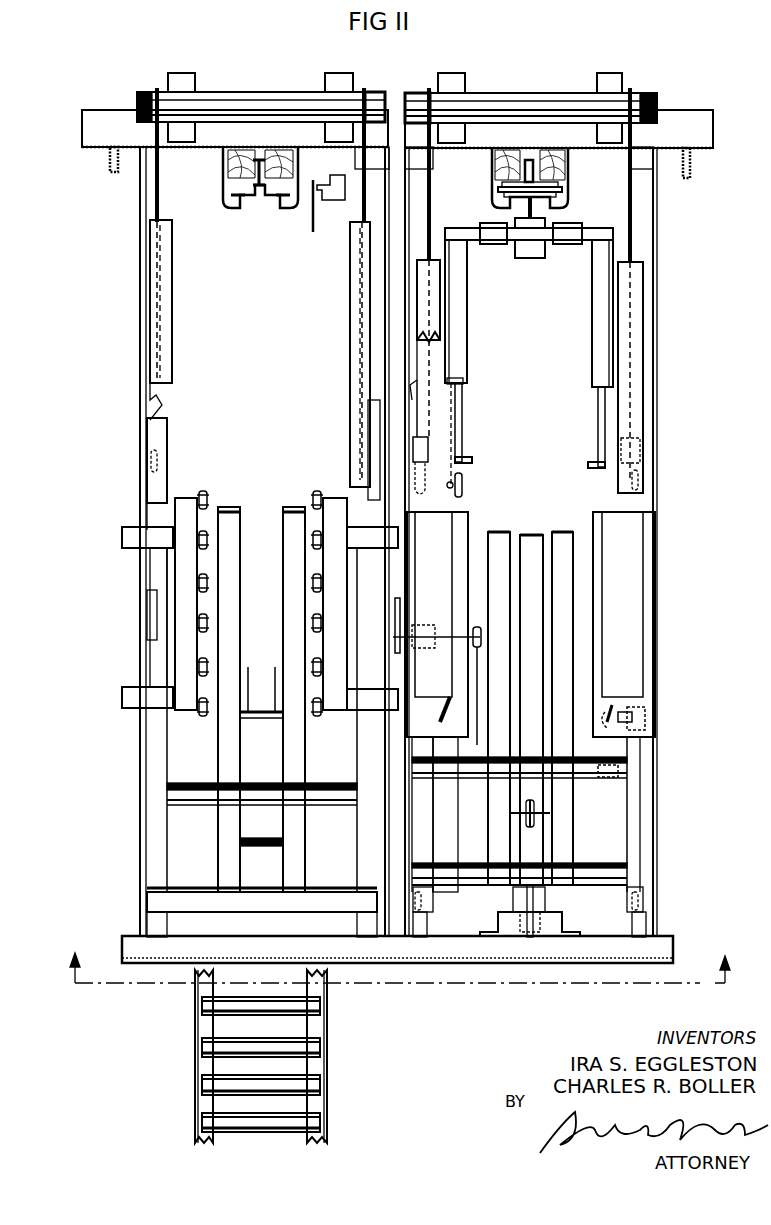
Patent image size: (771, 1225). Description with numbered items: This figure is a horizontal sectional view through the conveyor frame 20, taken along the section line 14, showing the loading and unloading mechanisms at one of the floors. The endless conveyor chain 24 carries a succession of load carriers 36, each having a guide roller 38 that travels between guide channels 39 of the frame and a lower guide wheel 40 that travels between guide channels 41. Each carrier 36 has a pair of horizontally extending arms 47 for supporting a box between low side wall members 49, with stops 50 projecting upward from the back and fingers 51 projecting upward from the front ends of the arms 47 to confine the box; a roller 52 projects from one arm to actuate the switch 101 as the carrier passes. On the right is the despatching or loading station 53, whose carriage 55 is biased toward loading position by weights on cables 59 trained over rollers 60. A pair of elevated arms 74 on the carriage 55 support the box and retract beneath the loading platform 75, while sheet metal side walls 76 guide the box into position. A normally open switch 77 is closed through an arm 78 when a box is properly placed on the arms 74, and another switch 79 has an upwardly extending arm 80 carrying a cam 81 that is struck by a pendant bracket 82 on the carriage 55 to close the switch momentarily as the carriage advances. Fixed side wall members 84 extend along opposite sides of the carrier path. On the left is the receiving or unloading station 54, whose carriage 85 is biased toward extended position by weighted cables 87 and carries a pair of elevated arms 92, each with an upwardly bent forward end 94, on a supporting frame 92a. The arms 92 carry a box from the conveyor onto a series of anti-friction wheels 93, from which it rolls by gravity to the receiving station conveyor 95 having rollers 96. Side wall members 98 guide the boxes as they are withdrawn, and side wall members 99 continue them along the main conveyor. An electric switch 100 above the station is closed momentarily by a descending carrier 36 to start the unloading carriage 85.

The section line 14 is at (400, 958).
The conveyor frame 20 is at (112, 152).
The endless conveyor chain 24 is at (261, 188).
The load carrier 36 is at (590, 228).
The guide roller 38 is at (504, 186).
The guide channels 39 is at (235, 180).
The guide wheel 40 is at (515, 225).
The guide channels 41 is at (240, 205).
The carrier arms 47 is at (462, 440).
The side wall members 49 is at (448, 360).
The stops 50 is at (494, 242).
The fingers 51 is at (471, 460).
The roller 52 is at (463, 478).
The despatching or loading station 53 is at (605, 802).
The receiving or unloading station 54 is at (196, 757).
The loading carriage 55 is at (428, 470).
The cables 59 is at (432, 192).
The rollers 60 is at (520, 106).
The elevated arms 74 is at (556, 546).
The loading platform 75 is at (560, 540).
The sheet metal side walls 76 is at (450, 550).
The switch 77 is at (430, 648).
The arm 78 is at (478, 745).
The switch 79 is at (646, 715).
The arm 80 is at (648, 702).
The cam 81 is at (607, 700).
The pendant bracket 82 is at (620, 770).
The fixed side wall members 84 is at (432, 305).
The unloading carriage 85 is at (160, 482).
The weighted cables 87 is at (366, 95).
The elevated arms 92 is at (293, 542).
The supporting frame 92a is at (296, 743).
The anti-friction wheels 93 is at (313, 626).
The upwardly bent forward end 94 is at (292, 502).
The receiving station conveyor 95 is at (199, 1048).
The rollers 96 is at (318, 1085).
The side wall members 98 is at (323, 648).
The side wall members 99 is at (172, 340).
The electric switch 100 is at (334, 195).
The switch 101 is at (313, 232).